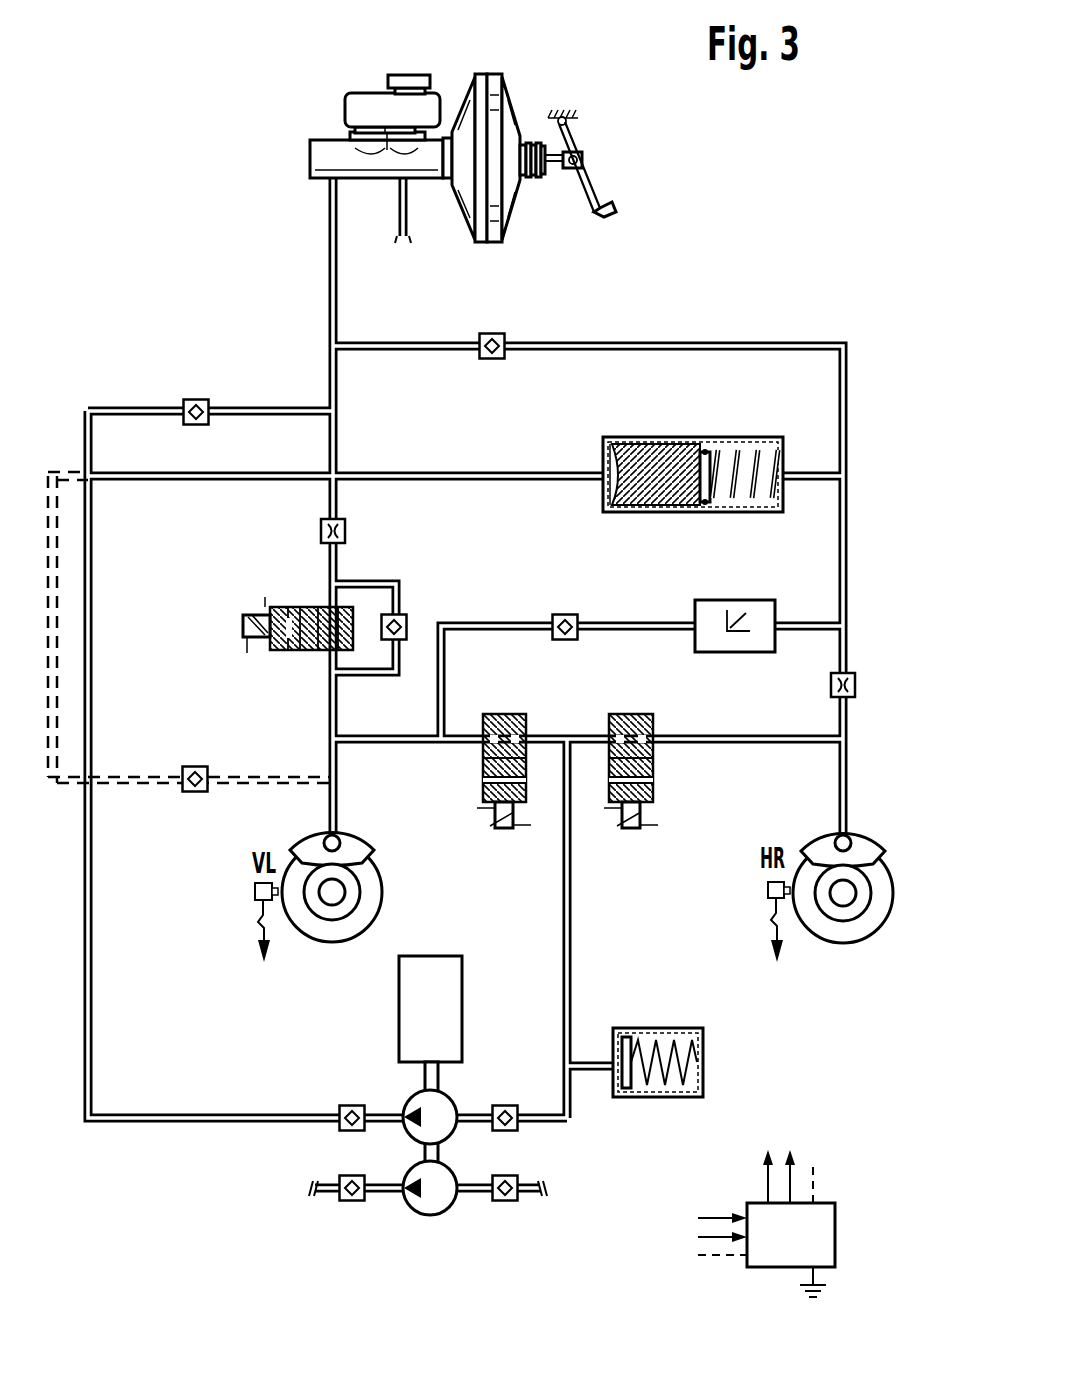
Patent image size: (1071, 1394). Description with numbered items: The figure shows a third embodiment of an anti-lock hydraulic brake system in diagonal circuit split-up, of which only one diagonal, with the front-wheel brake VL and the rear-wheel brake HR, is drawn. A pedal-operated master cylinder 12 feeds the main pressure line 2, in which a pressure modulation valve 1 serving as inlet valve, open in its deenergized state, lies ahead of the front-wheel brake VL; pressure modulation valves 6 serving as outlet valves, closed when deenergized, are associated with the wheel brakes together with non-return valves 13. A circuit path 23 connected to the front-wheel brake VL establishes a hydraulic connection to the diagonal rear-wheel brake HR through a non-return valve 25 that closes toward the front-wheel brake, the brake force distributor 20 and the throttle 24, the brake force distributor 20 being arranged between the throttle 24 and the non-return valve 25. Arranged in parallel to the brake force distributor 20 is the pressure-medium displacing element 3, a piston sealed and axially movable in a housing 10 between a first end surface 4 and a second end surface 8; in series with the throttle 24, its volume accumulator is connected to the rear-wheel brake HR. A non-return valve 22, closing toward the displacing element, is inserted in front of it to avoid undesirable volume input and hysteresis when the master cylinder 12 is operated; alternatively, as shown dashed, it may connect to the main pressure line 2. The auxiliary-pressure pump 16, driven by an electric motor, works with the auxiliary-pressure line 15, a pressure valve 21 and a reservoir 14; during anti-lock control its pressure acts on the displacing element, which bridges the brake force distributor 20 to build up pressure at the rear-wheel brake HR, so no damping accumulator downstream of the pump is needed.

The pressure modulation valve (inlet valve) 1 is at (300, 652).
The main pressure line 2 is at (329, 283).
The pressure-medium displacing element 3 is at (694, 459).
The first end surface 4 is at (607, 502).
The pressure modulation valve (outlet valve) 6 is at (482, 770).
The second end surface 8 is at (702, 505).
The housing 10 is at (700, 437).
The master cylinder 12 is at (318, 100).
The non-return valve 13 is at (492, 333).
The reservoir 14 is at (703, 1073).
The auxiliary-pressure line 15 is at (92, 983).
The auxiliary-pressure pump 16 is at (450, 1210).
The brake force distributor 20 is at (737, 652).
The pressure valve 21 is at (352, 1103).
The non-return valve 22 is at (197, 400).
The circuit path 23 is at (487, 622).
The throttle/restrictor 24 is at (832, 685).
The non-return valve 25 is at (553, 617).